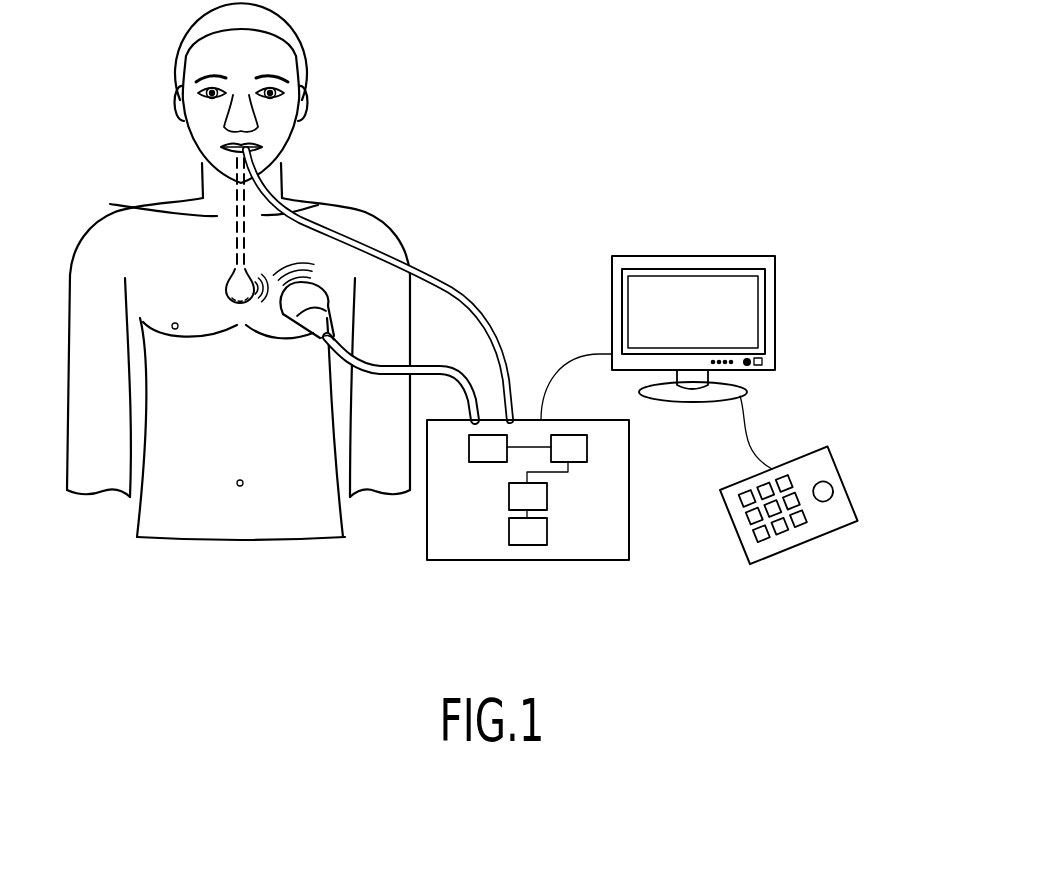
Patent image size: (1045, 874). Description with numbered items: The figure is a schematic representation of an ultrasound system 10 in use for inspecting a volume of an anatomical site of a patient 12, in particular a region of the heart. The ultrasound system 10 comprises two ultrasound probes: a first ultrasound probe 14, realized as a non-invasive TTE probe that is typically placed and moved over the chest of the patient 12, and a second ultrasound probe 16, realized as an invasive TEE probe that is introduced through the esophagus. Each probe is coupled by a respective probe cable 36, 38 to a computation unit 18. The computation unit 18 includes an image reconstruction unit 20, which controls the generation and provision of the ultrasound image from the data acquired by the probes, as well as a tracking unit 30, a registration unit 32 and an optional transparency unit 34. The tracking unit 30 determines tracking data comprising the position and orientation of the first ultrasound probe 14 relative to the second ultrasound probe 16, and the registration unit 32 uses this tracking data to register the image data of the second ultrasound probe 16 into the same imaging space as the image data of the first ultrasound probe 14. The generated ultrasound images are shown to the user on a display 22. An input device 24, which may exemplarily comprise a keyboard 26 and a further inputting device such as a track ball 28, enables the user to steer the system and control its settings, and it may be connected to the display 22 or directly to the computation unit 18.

The ultrasound system 10 is at (652, 76).
The patient 12 is at (378, 228).
The first ultrasound probe 14 is at (313, 283).
The second ultrasound probe 16 is at (232, 285).
The computation unit 18 is at (555, 493).
The image reconstruction unit 20 is at (547, 494).
The display 22 is at (693, 256).
The input device 24 is at (813, 549).
The keyboard 26 is at (797, 522).
The track ball 28 is at (833, 492).
The tracking unit 30 is at (482, 462).
The registration unit 32 is at (587, 447).
The transparency unit 34 is at (547, 529).
The probe cable 36 is at (378, 375).
The probe cable 38 is at (456, 296).